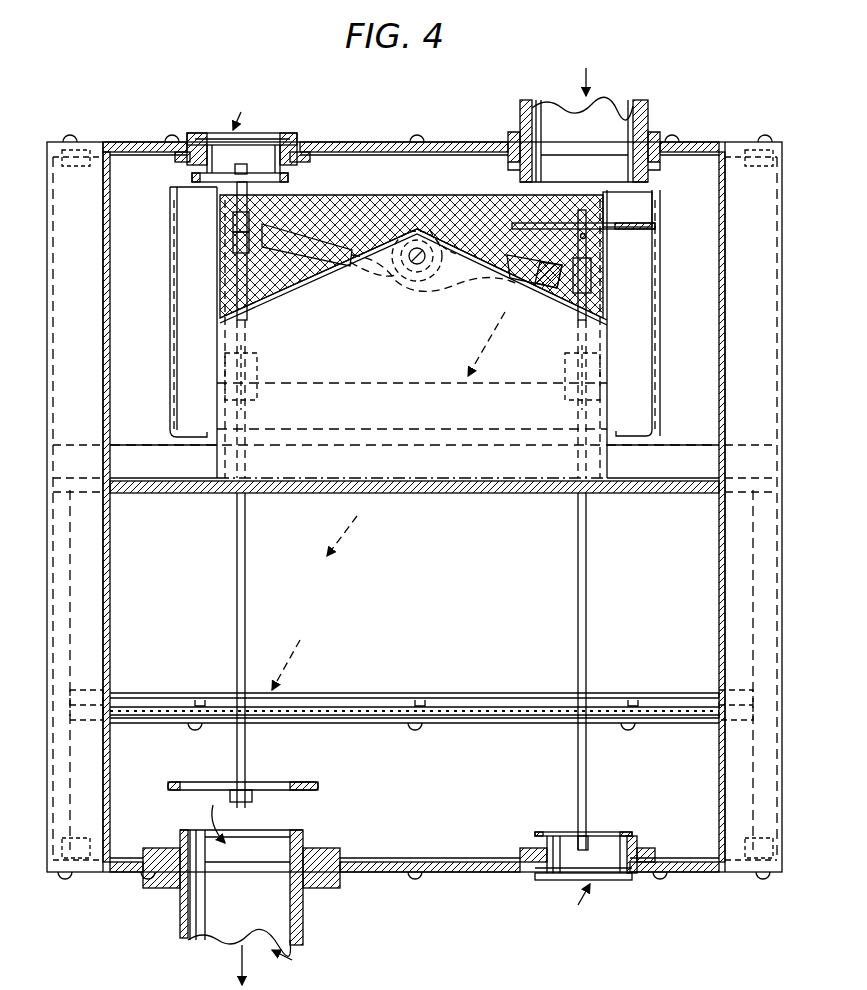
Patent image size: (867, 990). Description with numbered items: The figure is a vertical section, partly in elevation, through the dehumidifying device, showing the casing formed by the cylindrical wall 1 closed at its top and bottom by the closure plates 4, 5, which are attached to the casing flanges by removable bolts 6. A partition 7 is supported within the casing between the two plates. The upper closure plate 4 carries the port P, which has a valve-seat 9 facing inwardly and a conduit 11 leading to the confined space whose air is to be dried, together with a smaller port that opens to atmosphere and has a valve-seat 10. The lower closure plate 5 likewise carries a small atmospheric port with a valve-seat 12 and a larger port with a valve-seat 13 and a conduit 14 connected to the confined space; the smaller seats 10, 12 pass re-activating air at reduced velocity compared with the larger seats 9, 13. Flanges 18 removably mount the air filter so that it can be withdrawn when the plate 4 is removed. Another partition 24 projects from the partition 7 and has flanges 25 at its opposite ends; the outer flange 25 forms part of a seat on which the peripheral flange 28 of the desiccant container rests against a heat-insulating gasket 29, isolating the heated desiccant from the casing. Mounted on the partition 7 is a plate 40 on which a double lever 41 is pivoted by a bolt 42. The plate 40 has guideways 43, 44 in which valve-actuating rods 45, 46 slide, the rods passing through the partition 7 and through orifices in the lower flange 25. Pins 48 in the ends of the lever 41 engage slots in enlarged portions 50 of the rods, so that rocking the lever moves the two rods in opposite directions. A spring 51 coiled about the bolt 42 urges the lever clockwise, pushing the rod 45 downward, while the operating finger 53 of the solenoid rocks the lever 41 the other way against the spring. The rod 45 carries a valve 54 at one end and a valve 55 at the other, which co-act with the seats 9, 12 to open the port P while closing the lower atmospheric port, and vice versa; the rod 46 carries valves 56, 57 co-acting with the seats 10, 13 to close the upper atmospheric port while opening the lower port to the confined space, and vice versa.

The cylindrical wall 1 is at (740, 632).
The closure plate 4 is at (353, 148).
The closure plate 5 is at (482, 873).
The bolts 6 is at (170, 136).
The partition 7 is at (470, 493).
The valve-seat 9 is at (512, 172).
The valve-seat 10 is at (200, 170).
The conduit 11 is at (521, 118).
The valve-seat 12 is at (620, 848).
The valve-seat 13 is at (306, 838).
The conduit 14 is at (190, 912).
The flanges 18 is at (188, 318).
The partition 24 is at (455, 604).
The flanges 25 is at (467, 693).
The peripheral flange 28 is at (502, 722).
The gasket 29 is at (383, 713).
The plate 40 is at (412, 421).
The double lever 41 is at (346, 262).
The bolt 42 is at (417, 265).
The guideway 43 is at (566, 378).
The guideway 44 is at (257, 381).
The valve-actuating rod 45 is at (587, 550).
The valve-actuating rod 46 is at (236, 548).
The pins 48 is at (230, 232).
The enlarged portions 50 is at (237, 248).
The spring 51 is at (376, 300).
The operating finger 53 is at (360, 199).
The valve 54 is at (650, 223).
The valve 55 is at (550, 832).
The valve 56 is at (212, 181).
The valve 57 is at (285, 782).
The port P is at (655, 122).